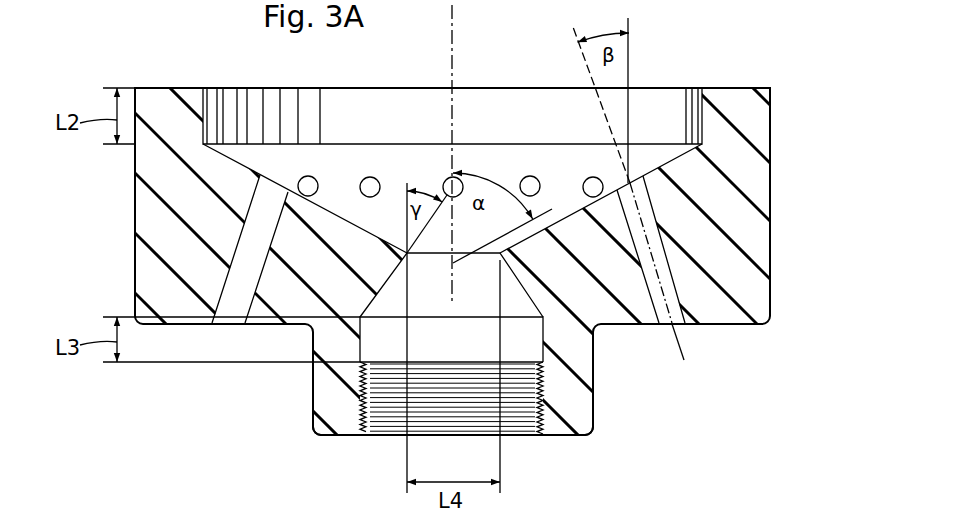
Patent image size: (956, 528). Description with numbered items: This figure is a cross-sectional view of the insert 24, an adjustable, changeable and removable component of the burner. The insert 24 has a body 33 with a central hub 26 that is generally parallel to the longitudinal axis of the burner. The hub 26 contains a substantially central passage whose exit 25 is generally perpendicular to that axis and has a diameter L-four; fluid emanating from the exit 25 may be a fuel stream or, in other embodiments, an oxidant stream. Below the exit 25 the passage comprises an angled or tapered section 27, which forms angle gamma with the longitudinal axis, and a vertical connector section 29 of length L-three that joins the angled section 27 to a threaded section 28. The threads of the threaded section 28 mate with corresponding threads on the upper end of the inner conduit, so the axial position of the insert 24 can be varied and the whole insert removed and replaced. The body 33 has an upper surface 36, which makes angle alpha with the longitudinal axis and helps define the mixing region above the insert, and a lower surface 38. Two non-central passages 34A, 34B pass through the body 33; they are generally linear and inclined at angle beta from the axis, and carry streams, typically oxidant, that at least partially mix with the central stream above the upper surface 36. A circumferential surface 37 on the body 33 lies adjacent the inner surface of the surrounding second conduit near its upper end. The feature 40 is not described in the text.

The insert 24 is at (750, 55).
The exit 25 is at (485, 262).
The central hub 26 is at (596, 413).
The angled section 27 is at (527, 296).
The threaded section 28 is at (372, 428).
The vertical connector section 29 is at (372, 357).
The body 33 is at (755, 187).
The non-central passage 34A is at (252, 257).
The non-central passage 34B is at (683, 330).
The upper surface 36 is at (684, 152).
The circumferential surface 37 is at (135, 268).
The lower surface 38 is at (740, 326).
The top groove 40 is at (182, 88).